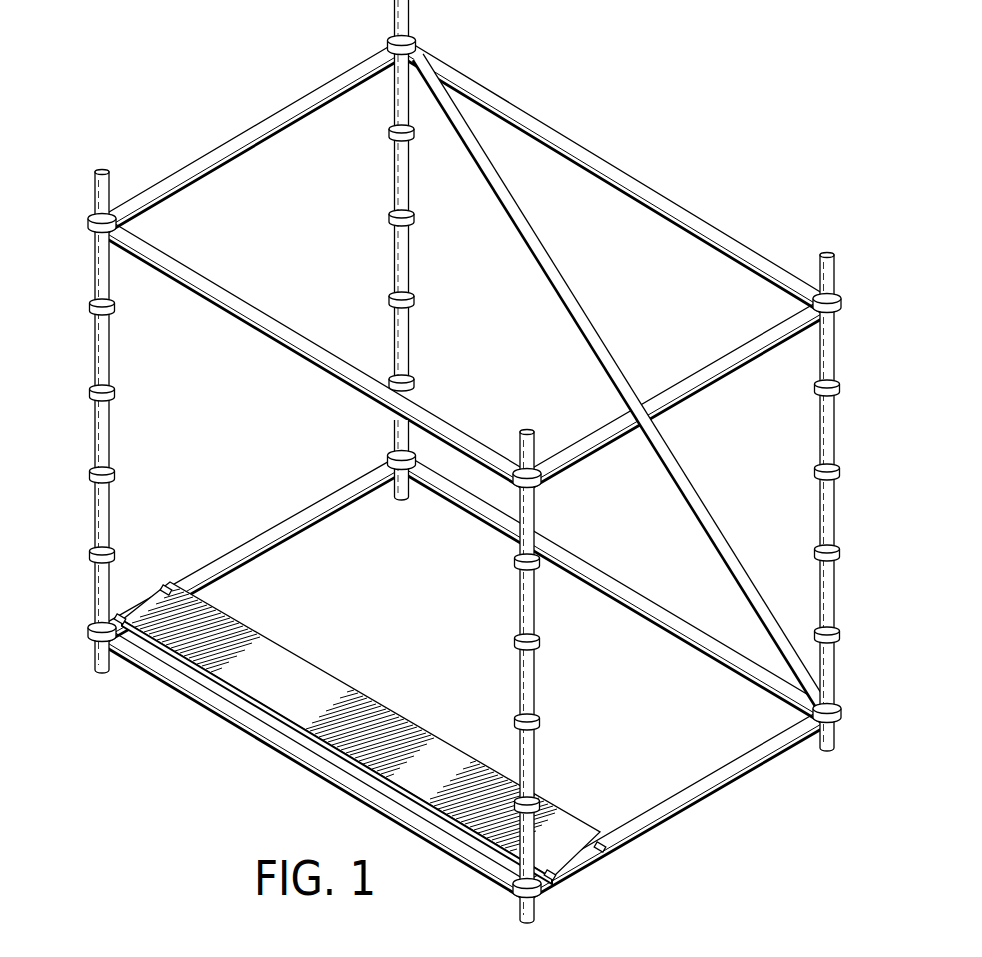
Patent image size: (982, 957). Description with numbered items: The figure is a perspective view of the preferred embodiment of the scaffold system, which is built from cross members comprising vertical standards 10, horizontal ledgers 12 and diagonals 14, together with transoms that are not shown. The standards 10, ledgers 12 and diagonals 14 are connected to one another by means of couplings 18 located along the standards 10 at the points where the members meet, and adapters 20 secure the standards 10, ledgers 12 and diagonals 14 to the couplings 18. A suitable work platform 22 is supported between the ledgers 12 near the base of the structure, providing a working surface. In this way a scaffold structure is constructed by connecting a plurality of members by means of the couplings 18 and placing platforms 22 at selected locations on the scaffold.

The standards 10 is at (408, 258).
The ledgers 12 is at (306, 498).
The diagonals 14 is at (614, 322).
The couplings 18 is at (95, 391).
The adapters 20 is at (838, 732).
The work platform 22 is at (332, 692).